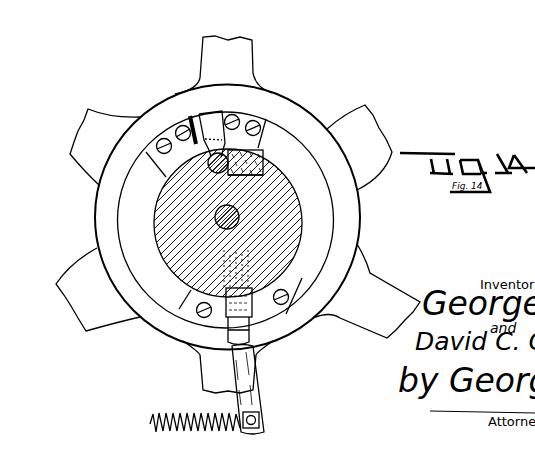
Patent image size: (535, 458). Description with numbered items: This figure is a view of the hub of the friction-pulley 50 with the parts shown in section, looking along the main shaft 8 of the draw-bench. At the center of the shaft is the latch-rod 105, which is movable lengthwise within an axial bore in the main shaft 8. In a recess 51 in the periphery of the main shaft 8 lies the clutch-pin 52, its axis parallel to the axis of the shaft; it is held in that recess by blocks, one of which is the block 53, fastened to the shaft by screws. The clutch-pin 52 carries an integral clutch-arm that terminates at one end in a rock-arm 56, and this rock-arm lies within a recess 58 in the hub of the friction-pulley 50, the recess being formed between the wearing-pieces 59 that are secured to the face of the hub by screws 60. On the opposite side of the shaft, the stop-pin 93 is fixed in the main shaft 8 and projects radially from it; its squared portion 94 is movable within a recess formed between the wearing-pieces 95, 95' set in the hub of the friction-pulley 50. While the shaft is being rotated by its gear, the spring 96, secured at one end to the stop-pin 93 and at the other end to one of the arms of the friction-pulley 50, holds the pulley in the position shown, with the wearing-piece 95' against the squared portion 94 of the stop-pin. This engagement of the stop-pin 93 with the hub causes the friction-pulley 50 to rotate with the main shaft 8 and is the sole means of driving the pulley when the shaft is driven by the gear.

The main shaft 8 is at (298, 228).
The friction-pulley 50 is at (372, 272).
The recess 51 is at (263, 150).
The clutch-pin 52 is at (263, 174).
The block 53 is at (263, 174).
The rock-arm 56 is at (227, 107).
The recess 58 is at (203, 113).
The wearing-pieces 59 is at (173, 128).
The screws 60 is at (185, 122).
The stop-pin 93 is at (262, 392).
The squared portion 94 is at (262, 326).
The wearing-piece 95 is at (289, 303).
The wearing-piece 95' is at (223, 322).
The spring 96 is at (170, 420).
The latch-rod 105 is at (216, 219).